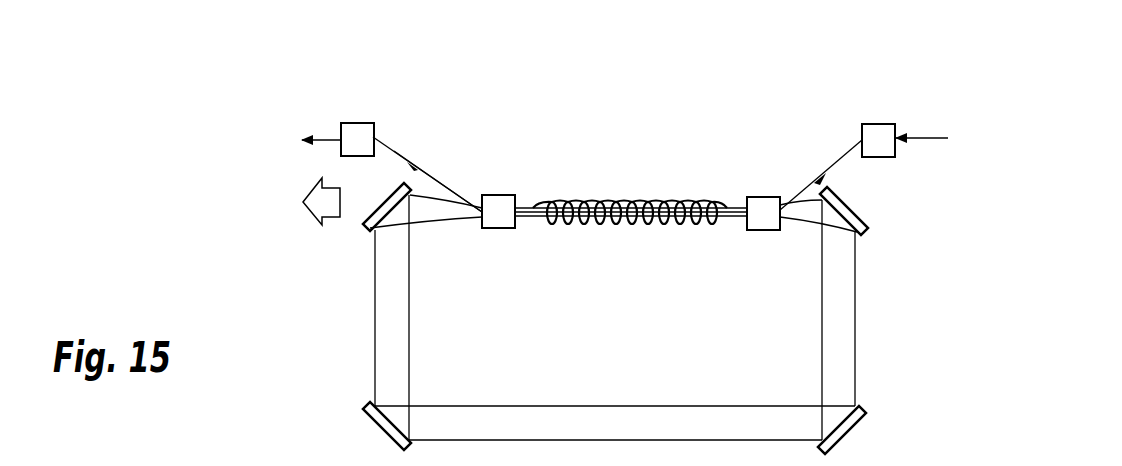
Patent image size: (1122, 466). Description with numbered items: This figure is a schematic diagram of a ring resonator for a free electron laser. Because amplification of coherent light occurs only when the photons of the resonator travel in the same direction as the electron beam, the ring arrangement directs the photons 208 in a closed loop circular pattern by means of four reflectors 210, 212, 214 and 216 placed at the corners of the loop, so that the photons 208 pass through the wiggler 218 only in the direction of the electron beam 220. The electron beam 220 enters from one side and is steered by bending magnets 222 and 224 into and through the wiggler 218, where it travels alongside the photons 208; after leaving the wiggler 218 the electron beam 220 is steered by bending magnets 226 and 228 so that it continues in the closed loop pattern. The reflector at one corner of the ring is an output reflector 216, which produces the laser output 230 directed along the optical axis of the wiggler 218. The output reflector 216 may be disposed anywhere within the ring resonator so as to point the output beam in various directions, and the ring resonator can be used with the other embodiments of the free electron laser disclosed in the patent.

The photons 208 is at (402, 303).
The reflector 210 is at (377, 420).
The reflector 212 is at (847, 422).
The reflector 214 is at (865, 222).
The output reflector 216 is at (371, 231).
The wiggler 218 is at (695, 223).
The electron beam 220 is at (937, 140).
The bending magnet 222 is at (888, 132).
The bending magnet 224 is at (772, 197).
The bending magnet 226 is at (500, 203).
The bending magnet 228 is at (374, 133).
The laser output 230 is at (306, 198).